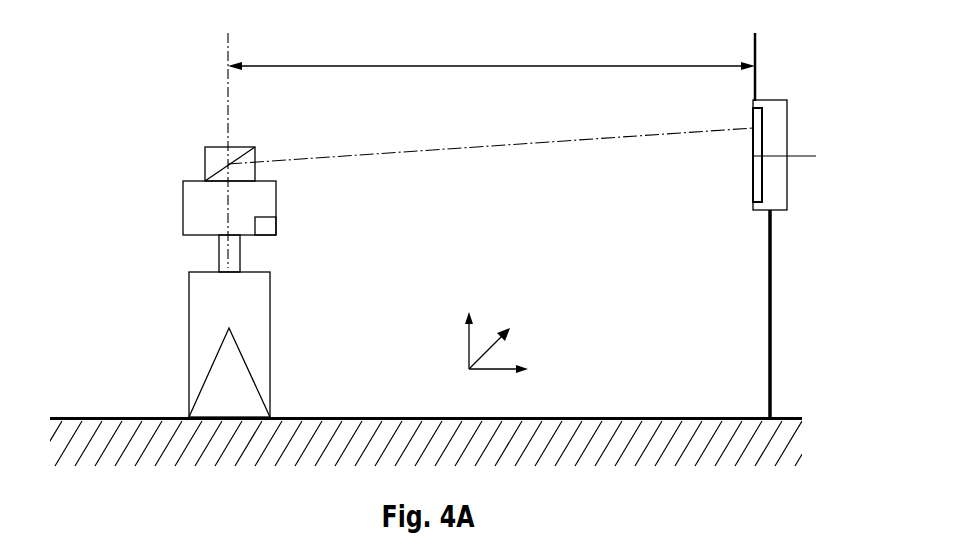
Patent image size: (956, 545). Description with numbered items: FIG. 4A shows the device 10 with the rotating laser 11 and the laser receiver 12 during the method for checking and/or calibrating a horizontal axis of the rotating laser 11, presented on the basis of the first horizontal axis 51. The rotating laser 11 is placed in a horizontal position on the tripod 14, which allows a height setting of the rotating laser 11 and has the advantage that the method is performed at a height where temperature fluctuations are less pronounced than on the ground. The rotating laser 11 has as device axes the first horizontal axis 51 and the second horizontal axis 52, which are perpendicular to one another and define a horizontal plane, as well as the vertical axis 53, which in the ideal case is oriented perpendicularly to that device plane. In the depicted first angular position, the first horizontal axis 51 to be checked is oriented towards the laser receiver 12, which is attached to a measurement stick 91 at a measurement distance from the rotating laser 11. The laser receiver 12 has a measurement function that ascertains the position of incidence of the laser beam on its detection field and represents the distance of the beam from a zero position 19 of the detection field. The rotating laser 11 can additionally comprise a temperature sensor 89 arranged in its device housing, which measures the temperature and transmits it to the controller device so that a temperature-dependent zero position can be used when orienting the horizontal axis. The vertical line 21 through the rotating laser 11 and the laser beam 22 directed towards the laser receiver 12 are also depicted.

The device 10 is at (142, 67).
The rotating laser 11 is at (200, 208).
The laser receiver 12 is at (745, 218).
The tripod 14 is at (198, 313).
The zero position 19 is at (808, 158).
The vertical axis 21 is at (230, 117).
The measurement beam 22 is at (563, 145).
The first horizontal axis 51 is at (514, 372).
The second horizontal axis 52 is at (500, 337).
The vertical axis 53 is at (468, 327).
The temperature sensor 89 is at (265, 227).
The measurement stick 91 is at (769, 370).